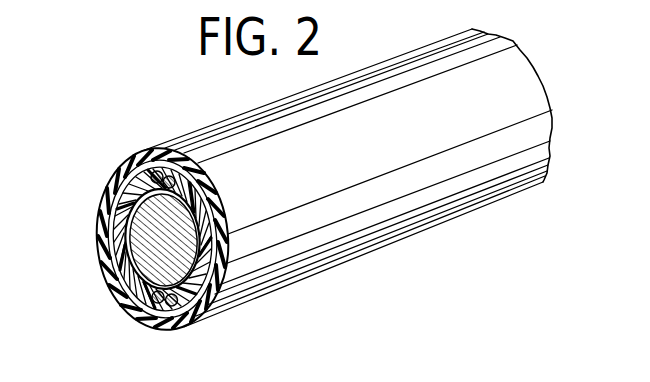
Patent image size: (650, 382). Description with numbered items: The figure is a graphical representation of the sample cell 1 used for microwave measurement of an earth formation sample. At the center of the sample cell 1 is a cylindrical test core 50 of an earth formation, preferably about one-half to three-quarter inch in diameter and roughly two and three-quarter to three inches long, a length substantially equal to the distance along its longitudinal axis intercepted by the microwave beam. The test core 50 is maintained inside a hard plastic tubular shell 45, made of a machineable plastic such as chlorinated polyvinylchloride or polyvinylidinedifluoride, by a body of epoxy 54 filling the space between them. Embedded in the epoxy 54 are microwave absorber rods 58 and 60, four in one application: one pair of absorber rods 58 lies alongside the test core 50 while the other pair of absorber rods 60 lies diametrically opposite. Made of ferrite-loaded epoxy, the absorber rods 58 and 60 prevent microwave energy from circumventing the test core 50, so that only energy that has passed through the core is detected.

The sample cell 1 is at (514, 199).
The tubular shell 45 is at (100, 233).
The test core 50 is at (146, 262).
The epoxy 54 is at (220, 307).
The absorber rods 58 is at (167, 306).
The absorber rods 60 is at (168, 176).